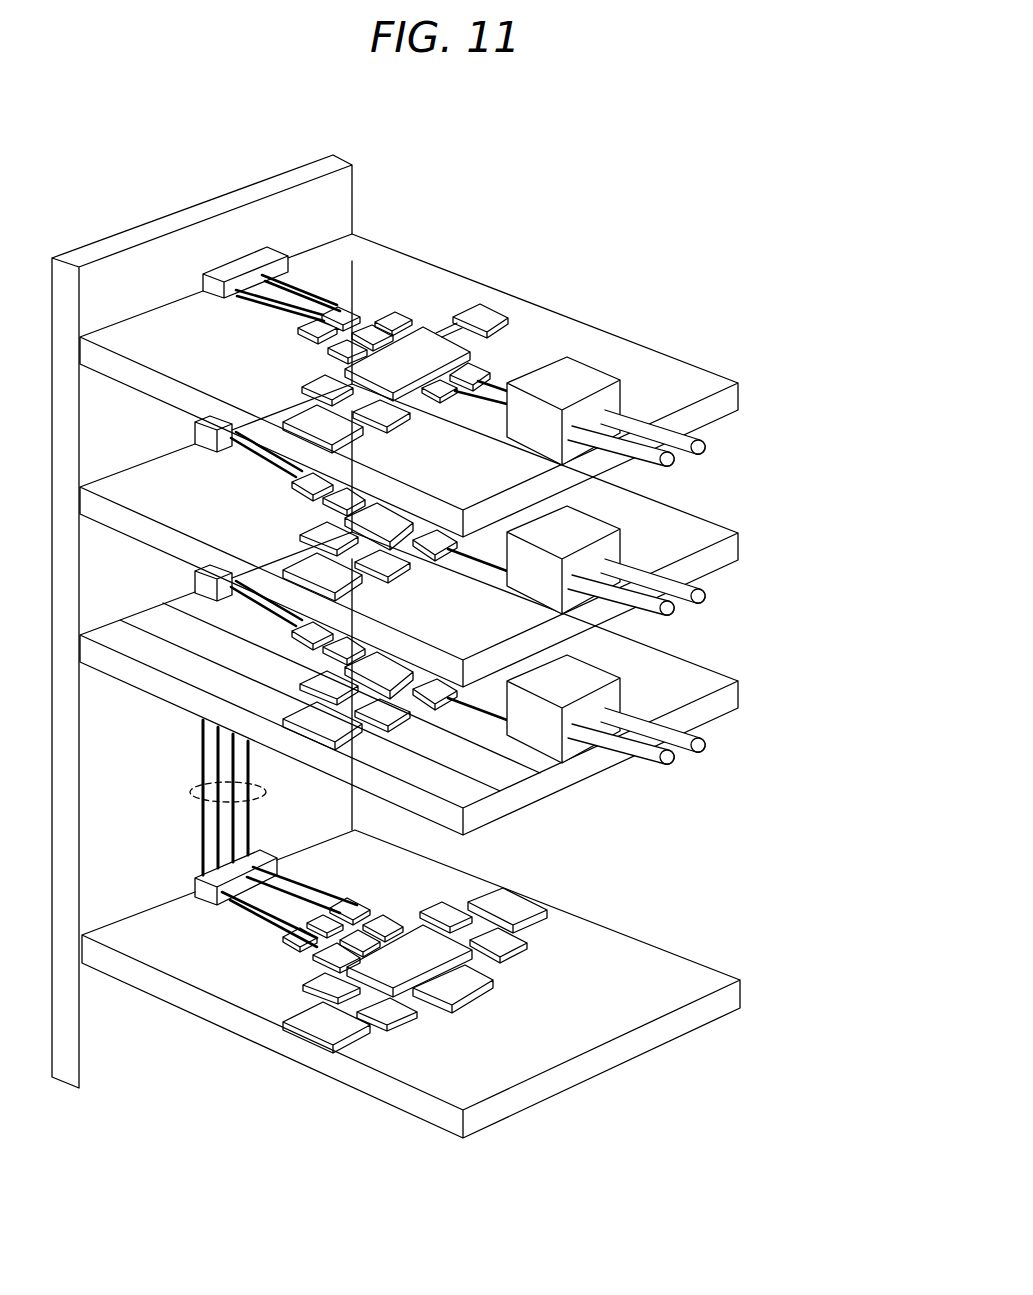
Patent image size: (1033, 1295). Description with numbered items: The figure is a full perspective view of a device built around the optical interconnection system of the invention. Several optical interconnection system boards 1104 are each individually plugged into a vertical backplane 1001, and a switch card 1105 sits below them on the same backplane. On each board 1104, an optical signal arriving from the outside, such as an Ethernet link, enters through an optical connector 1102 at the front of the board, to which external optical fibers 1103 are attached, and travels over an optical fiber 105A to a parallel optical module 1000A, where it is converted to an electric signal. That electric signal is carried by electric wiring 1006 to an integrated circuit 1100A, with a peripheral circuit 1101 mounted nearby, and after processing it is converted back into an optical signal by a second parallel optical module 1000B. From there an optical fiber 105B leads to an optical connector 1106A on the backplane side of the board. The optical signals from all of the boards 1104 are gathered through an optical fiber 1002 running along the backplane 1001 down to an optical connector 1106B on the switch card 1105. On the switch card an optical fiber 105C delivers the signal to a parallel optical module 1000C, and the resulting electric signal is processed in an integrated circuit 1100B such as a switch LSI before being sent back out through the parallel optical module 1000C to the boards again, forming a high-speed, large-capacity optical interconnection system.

The backplane 1001 is at (228, 207).
The optical fiber 1002 is at (195, 790).
The electric wiring 1006 is at (337, 405).
The optical fiber 105A is at (505, 386).
The optical fiber 105B is at (325, 285).
The optical fiber 105C is at (253, 918).
The parallel optical module 1000A is at (457, 380).
The parallel optical module 1000B is at (382, 315).
The parallel optical module 1000C is at (318, 958).
The integrated circuit 1100A is at (407, 360).
The integrated circuit 1100B is at (390, 967).
The peripheral circuit 1101 is at (483, 313).
The optical connector 1102 is at (603, 377).
The optical fiber 1103 is at (707, 428).
The optical interconnection system board 1104 is at (727, 363).
The switch card 1105 is at (693, 980).
The optical connector 1106A is at (257, 260).
The optical connector 1106B is at (213, 875).